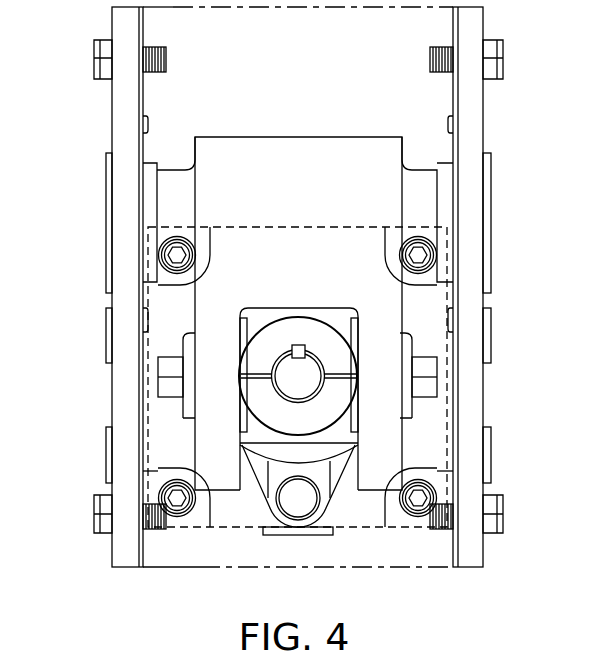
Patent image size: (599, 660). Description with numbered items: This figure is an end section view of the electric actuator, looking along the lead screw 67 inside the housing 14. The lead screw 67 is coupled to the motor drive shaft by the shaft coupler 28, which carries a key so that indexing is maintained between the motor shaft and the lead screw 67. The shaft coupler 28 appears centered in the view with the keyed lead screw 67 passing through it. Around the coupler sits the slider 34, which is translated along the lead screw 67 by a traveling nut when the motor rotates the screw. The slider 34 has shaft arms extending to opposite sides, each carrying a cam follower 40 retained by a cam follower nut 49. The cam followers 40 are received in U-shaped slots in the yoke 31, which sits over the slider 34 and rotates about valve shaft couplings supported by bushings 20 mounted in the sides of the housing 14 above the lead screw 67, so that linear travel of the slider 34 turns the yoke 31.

The housing 14 is at (112, 115).
The bushings 20 is at (107, 180).
The yoke 31 is at (292, 136).
The slider 34 is at (243, 340).
The shaft coupler 28 is at (243, 388).
The cam follower 40 is at (173, 412).
The lead screw 67 is at (305, 376).
The cam follower nuts 49 is at (438, 378).